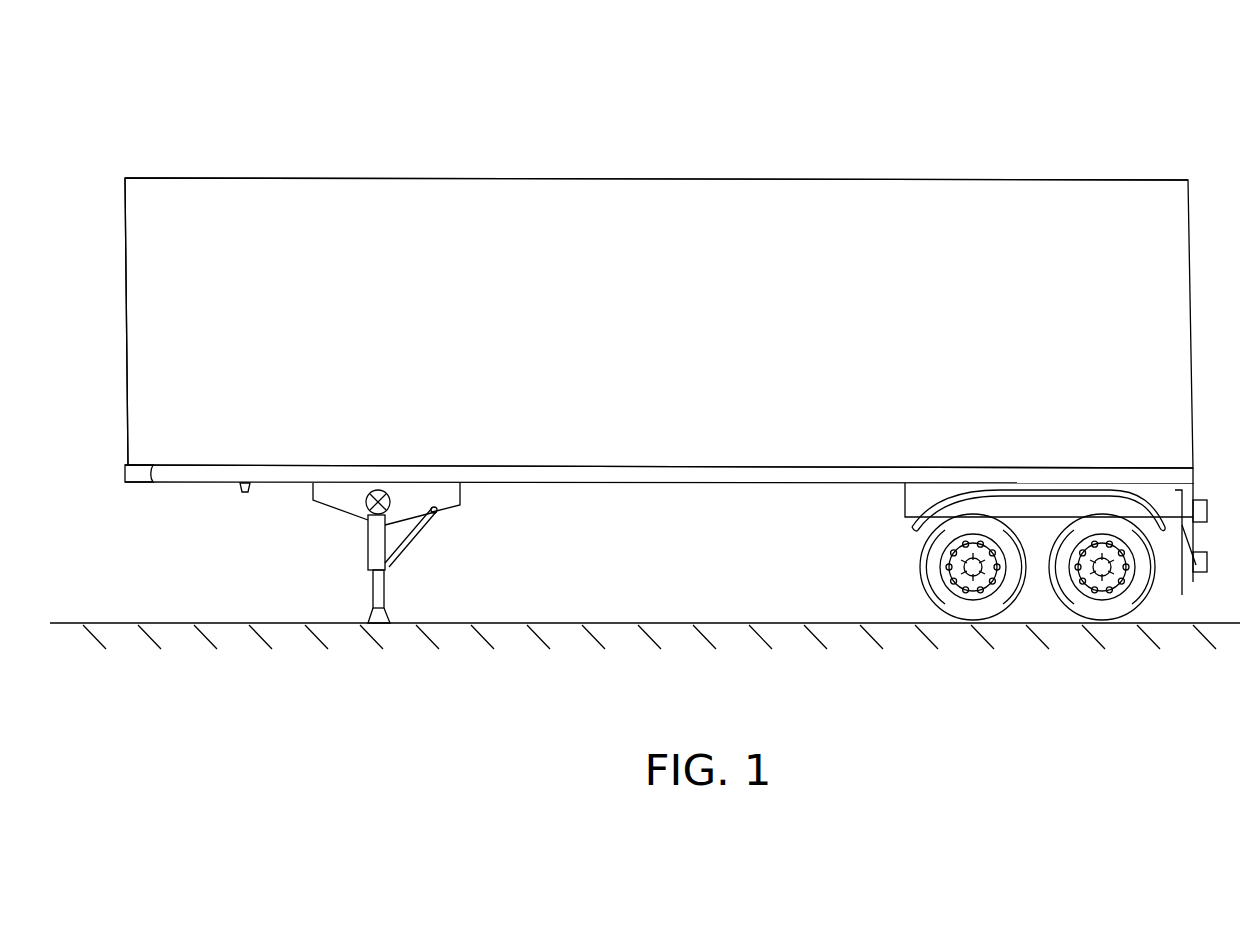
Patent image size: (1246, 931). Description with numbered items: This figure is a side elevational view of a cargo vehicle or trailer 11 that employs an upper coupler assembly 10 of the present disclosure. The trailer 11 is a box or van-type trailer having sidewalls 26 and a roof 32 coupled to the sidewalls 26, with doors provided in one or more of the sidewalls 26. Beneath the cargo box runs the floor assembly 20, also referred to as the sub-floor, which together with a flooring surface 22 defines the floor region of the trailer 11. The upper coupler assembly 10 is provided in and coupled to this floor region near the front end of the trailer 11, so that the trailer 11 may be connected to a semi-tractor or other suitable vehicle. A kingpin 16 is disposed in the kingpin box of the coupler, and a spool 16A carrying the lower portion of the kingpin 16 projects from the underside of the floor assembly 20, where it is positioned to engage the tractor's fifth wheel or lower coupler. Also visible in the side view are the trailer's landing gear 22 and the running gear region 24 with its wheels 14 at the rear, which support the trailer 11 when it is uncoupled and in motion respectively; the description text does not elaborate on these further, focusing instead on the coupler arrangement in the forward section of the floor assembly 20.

The upper coupler assembly 10 is at (170, 497).
The trailer 11 is at (822, 146).
The kingpin 16 is at (261, 500).
The spool 16A is at (247, 494).
The floor assembly 20 is at (590, 495).
The sidewalls 26 is at (125, 288).
The roof 32 is at (404, 179).
The flooring surface 22 is at (386, 553).
The fender and axle assembly 24 is at (1056, 539).
The wheels 14 is at (1037, 567).